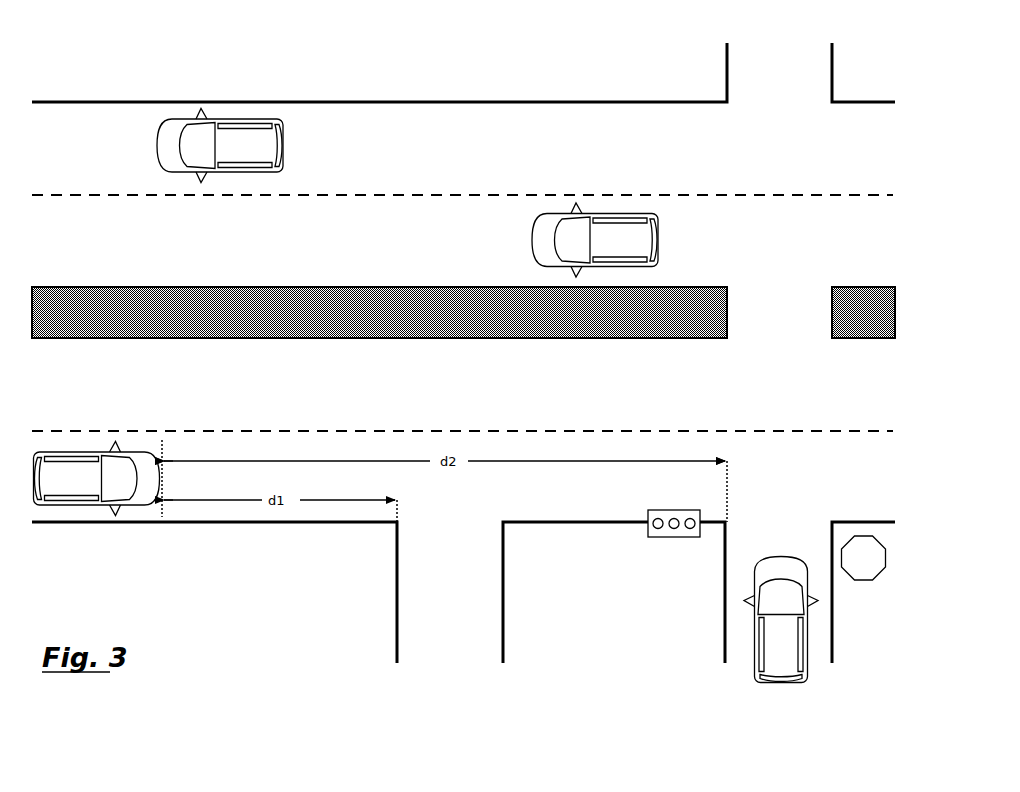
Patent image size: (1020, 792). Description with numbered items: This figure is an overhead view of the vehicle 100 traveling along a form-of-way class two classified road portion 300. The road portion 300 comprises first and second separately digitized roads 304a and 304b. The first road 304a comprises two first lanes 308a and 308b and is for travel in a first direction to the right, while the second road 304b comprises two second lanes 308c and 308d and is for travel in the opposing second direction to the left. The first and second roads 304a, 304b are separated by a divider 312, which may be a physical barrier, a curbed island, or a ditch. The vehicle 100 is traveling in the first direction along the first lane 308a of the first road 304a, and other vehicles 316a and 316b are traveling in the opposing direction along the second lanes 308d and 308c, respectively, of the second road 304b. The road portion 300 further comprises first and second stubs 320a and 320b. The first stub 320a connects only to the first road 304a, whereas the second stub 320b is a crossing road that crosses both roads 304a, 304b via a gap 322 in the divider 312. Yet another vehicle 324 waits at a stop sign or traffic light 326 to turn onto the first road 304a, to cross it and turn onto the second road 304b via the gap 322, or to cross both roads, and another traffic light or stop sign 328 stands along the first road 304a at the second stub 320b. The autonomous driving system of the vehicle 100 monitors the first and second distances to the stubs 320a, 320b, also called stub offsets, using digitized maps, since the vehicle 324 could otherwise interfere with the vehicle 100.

The FOW 2 classified road portion 300 is at (98, 68).
The vehicle 100 is at (70, 506).
The other vehicle 316a is at (157, 147).
The other vehicle 316b is at (532, 241).
The divider 312 is at (463, 312).
The gap 322 is at (780, 314).
The first stub 320a is at (340, 592).
The second stub 320b is at (463, 353).
The first road 304a is at (484, 432).
The second road 304b is at (484, 196).
The first lane 308a is at (876, 481).
The first lane 308b is at (876, 381).
The second lane 308c is at (876, 240).
The second lane 308d is at (876, 155).
The vehicle 324 is at (757, 664).
The stop sign or traffic light 326 is at (880, 573).
The traffic light or stop sign 328 is at (648, 536).